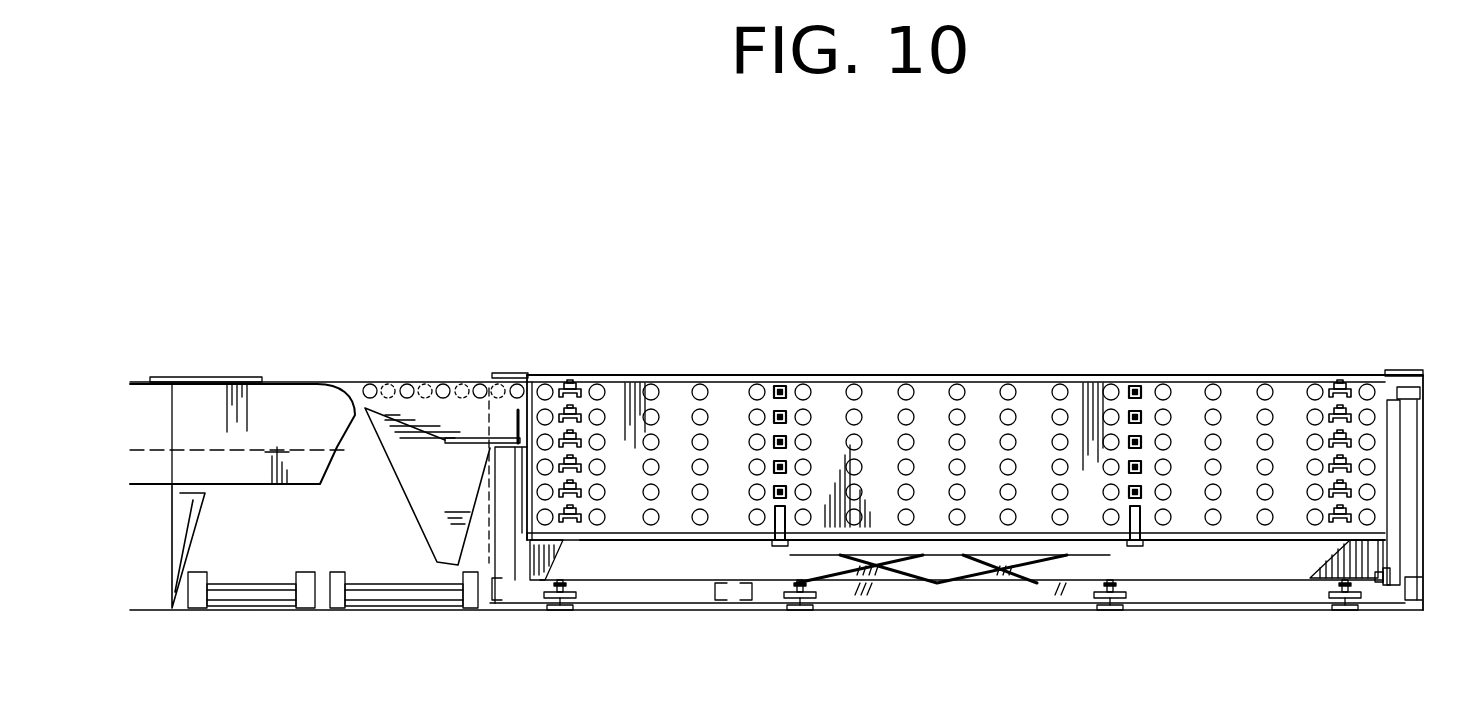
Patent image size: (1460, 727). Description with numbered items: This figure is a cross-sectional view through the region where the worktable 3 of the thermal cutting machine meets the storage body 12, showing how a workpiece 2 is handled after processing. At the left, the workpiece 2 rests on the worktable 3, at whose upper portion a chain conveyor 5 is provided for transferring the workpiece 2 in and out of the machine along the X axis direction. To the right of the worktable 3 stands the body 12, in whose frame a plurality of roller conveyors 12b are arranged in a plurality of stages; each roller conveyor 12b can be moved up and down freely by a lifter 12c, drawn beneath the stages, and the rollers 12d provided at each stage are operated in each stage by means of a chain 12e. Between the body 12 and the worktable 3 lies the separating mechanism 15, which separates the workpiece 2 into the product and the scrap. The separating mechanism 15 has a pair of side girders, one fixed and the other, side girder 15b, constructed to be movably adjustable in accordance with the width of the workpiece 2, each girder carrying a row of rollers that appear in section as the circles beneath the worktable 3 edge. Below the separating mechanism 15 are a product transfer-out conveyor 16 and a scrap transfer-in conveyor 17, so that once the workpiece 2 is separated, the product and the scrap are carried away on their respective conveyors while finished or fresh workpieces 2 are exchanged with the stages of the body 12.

The workpiece 2 is at (205, 378).
The worktable 3 is at (152, 407).
The chain conveyor 5 is at (297, 382).
The body 12 is at (1425, 413).
The roller conveyors 12b is at (1220, 437).
The lifter 12c is at (900, 580).
The rollers 12d is at (960, 385).
The chain 12e is at (1422, 577).
The separating mechanism 15 is at (450, 382).
The side girder 15b is at (422, 383).
The product transfer-out conveyor 16 is at (428, 612).
The scrap transfer-in conveyor 17 is at (260, 612).